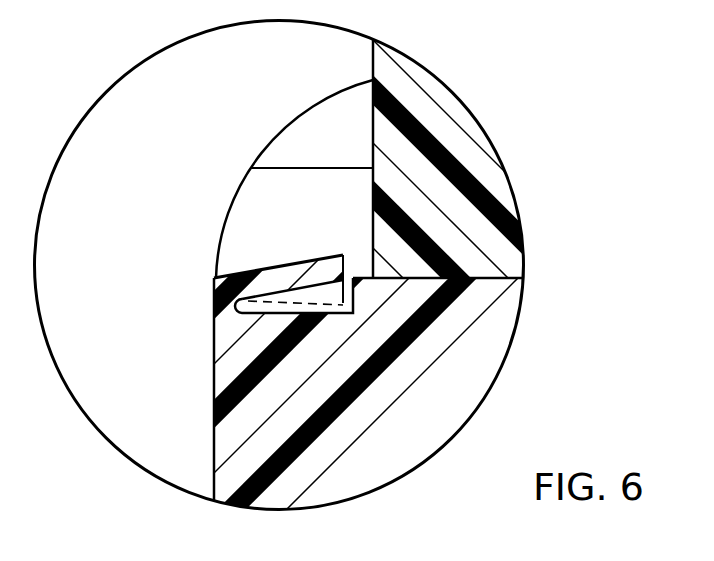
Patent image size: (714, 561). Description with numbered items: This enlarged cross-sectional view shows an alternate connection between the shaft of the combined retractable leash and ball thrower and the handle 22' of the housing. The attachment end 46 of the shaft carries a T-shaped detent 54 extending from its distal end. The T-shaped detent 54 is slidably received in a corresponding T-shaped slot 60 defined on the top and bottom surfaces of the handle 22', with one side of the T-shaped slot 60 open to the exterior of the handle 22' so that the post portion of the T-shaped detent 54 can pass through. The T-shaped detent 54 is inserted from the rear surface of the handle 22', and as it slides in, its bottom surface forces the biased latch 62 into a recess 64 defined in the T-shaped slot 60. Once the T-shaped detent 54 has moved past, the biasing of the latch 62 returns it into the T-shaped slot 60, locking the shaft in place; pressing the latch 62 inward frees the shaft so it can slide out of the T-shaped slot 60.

The attachment end 46 is at (383, 62).
The T-shaped detent 54 is at (512, 258).
The T-shaped slot 60 is at (292, 148).
The biased latch 62 is at (285, 262).
The recess 64 is at (240, 312).
The handle 22' is at (308, 370).